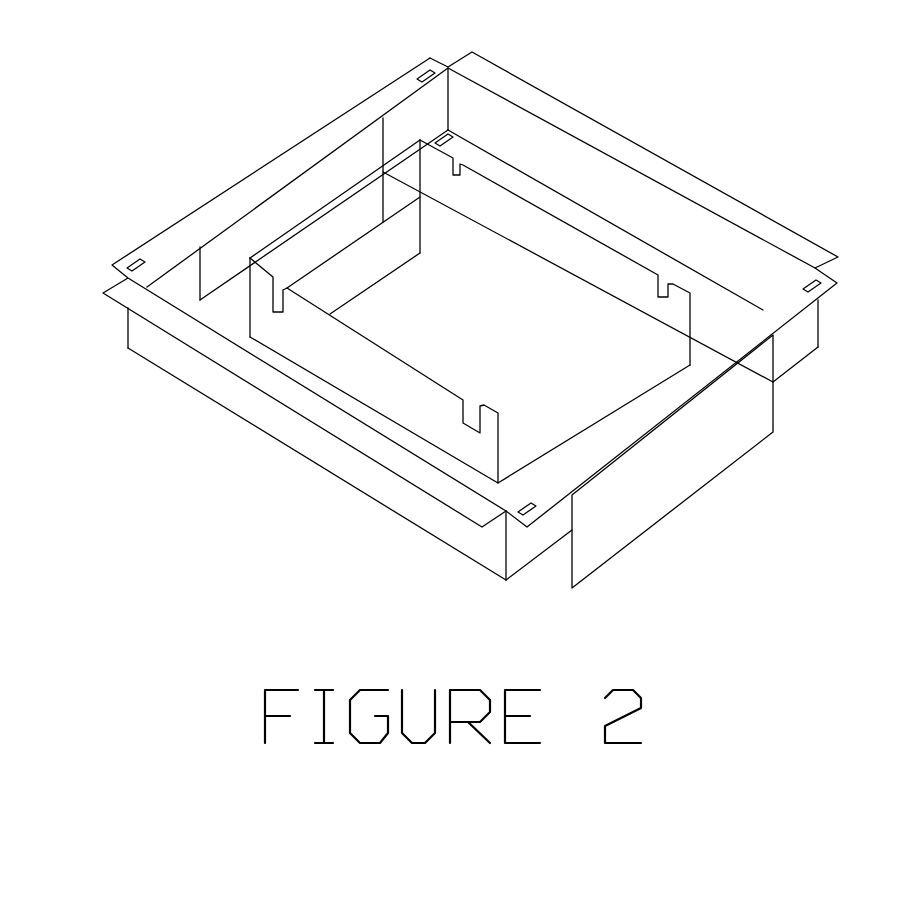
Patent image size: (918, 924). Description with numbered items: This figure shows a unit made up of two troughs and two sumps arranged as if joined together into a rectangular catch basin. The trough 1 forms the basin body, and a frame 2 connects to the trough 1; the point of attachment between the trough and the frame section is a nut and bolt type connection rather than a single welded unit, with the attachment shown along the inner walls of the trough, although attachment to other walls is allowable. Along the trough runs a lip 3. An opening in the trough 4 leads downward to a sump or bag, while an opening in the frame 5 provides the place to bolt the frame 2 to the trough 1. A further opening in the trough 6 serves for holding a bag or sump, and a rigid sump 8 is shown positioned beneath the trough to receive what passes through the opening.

The trough 1 is at (285, 450).
The frame 2 is at (285, 148).
The lip 3 is at (618, 127).
The opening in the trough 4 is at (223, 308).
The opening in frame 5 is at (438, 68).
The opening in the trough for holding a bag or sump 6 is at (465, 434).
The rigid sump 8 is at (765, 503).